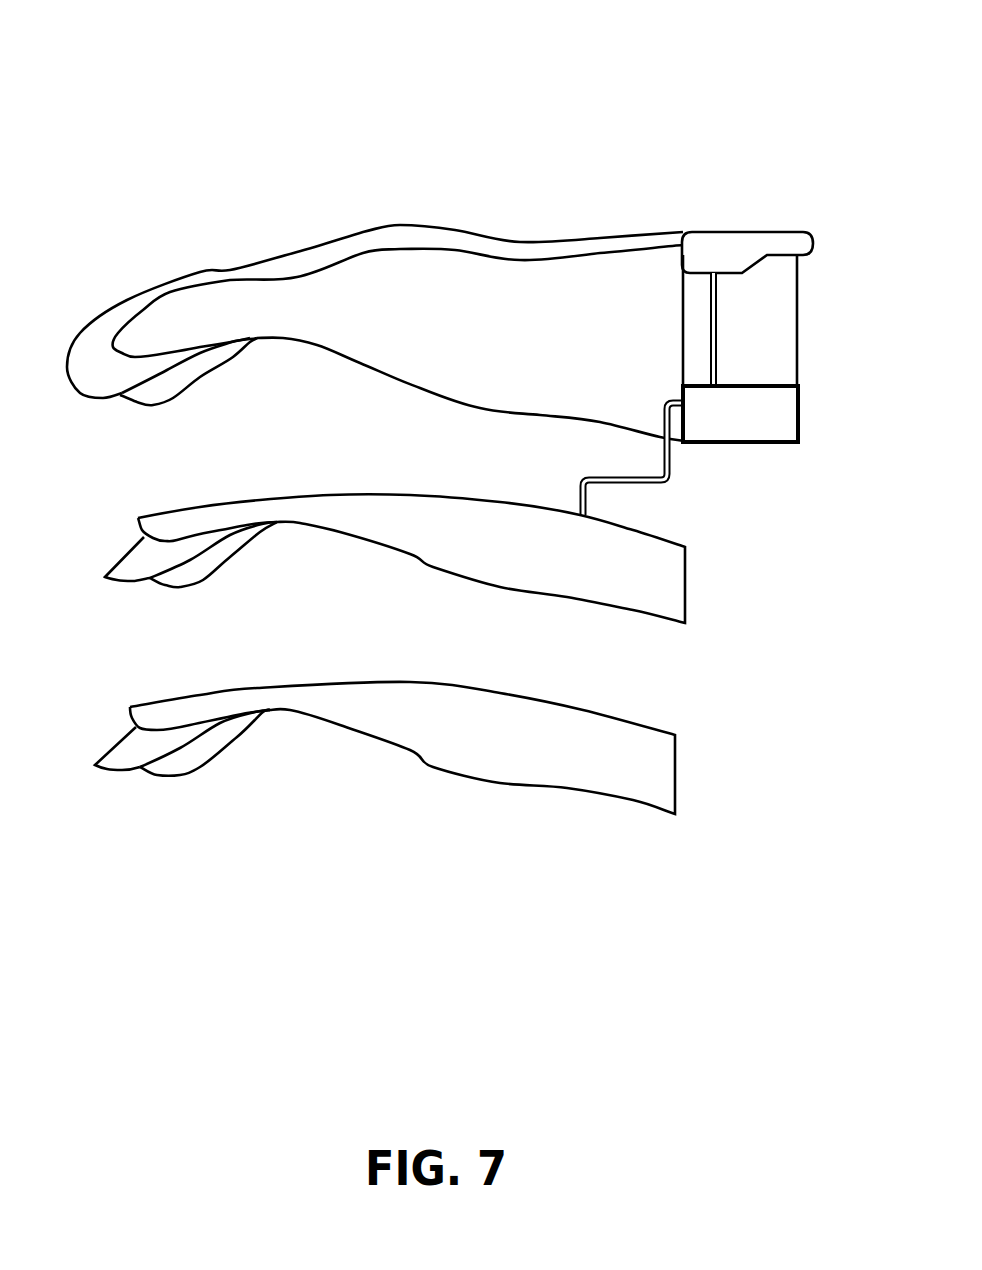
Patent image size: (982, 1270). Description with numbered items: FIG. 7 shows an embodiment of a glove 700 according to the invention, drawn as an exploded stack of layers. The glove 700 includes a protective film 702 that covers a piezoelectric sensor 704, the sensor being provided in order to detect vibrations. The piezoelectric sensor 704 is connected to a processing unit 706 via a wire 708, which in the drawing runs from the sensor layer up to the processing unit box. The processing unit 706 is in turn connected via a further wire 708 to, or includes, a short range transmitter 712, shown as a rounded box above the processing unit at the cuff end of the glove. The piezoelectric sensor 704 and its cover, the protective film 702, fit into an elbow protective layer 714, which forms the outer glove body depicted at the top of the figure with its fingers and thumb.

The glove 700 is at (531, 189).
The protective film 702 is at (436, 733).
The piezoelectric sensor 704 is at (357, 517).
The processing unit 706 is at (733, 443).
The wire 708 is at (722, 207).
The short range transmitter 712 is at (813, 242).
The elbow protective layer 714 is at (390, 302).